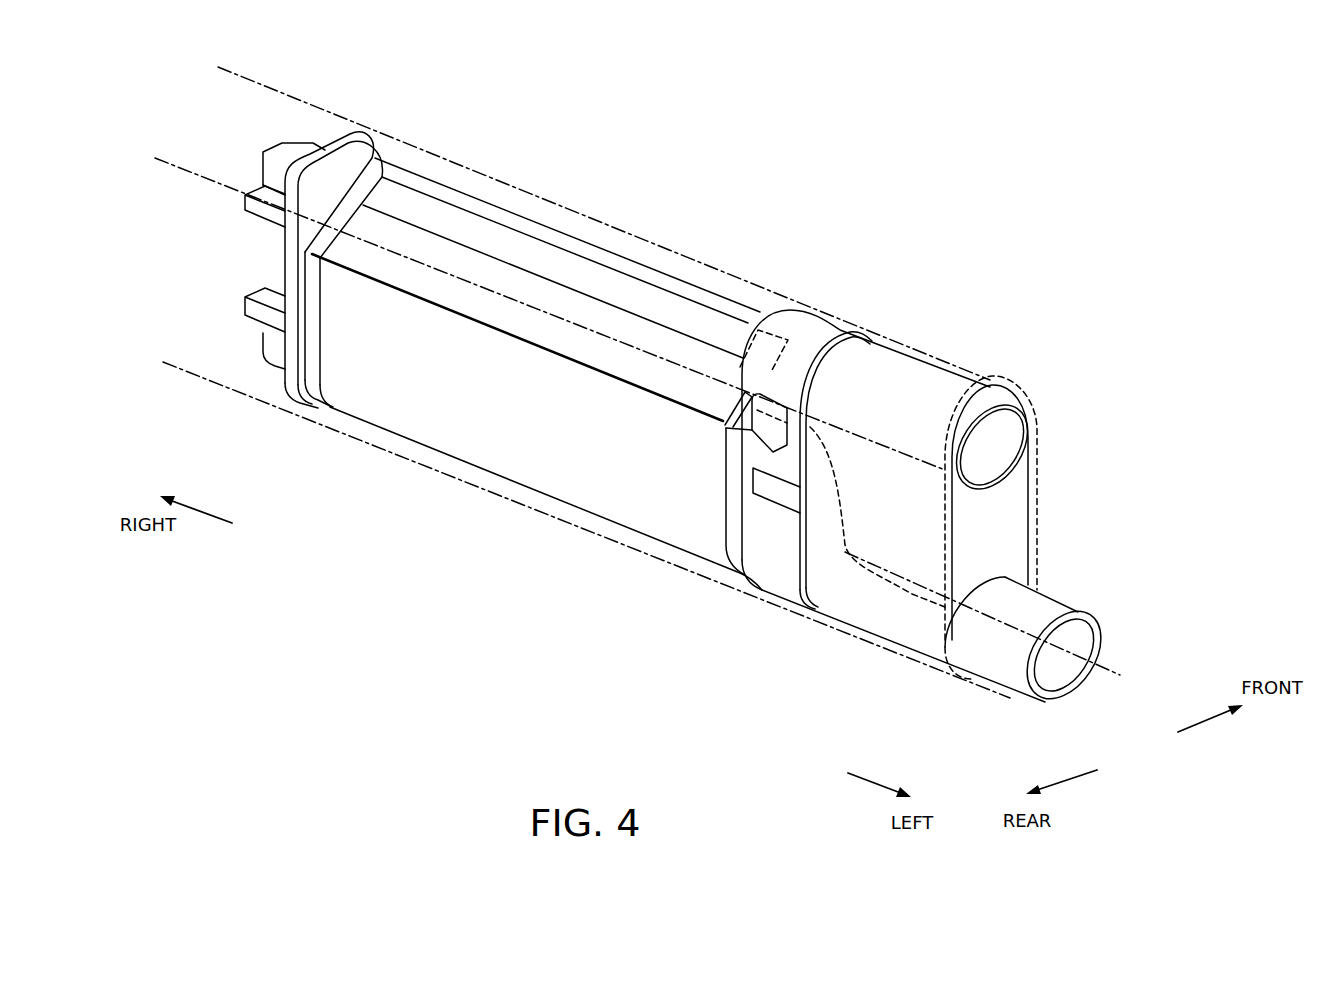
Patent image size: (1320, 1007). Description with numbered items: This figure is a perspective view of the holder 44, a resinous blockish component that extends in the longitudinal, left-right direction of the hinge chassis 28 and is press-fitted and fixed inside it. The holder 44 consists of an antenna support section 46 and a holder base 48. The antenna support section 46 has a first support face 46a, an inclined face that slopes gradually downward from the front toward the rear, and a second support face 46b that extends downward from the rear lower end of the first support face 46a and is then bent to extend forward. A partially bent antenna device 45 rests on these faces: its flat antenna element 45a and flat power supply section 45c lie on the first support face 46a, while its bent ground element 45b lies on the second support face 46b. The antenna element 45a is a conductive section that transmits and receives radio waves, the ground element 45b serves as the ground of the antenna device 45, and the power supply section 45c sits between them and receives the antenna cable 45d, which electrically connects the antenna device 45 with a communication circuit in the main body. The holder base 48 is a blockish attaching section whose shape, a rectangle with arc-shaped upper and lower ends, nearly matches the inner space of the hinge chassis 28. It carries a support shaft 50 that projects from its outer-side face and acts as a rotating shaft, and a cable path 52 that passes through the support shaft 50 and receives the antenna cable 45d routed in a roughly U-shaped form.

The holder 44 is at (352, 53).
The hinge chassis 28 is at (576, 203).
The antenna device 45 is at (474, 430).
The antenna element 45a is at (705, 318).
The ground element 45b is at (560, 483).
The power supply section 45c is at (440, 278).
The antenna cable 45d is at (847, 553).
The antenna support section 46 is at (300, 353).
The first support face 46a is at (647, 275).
The second support face 46b is at (313, 378).
The holder base 48 is at (875, 595).
The support shaft 50 is at (987, 663).
The cable path 52 is at (1003, 448).